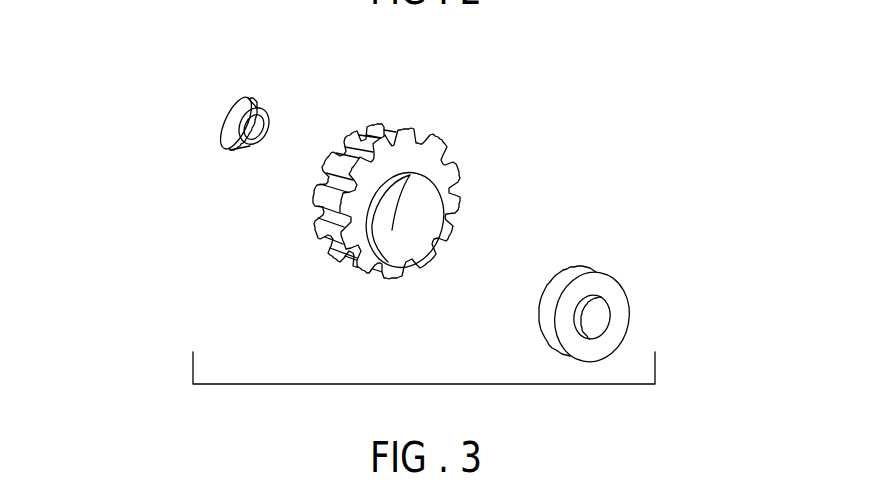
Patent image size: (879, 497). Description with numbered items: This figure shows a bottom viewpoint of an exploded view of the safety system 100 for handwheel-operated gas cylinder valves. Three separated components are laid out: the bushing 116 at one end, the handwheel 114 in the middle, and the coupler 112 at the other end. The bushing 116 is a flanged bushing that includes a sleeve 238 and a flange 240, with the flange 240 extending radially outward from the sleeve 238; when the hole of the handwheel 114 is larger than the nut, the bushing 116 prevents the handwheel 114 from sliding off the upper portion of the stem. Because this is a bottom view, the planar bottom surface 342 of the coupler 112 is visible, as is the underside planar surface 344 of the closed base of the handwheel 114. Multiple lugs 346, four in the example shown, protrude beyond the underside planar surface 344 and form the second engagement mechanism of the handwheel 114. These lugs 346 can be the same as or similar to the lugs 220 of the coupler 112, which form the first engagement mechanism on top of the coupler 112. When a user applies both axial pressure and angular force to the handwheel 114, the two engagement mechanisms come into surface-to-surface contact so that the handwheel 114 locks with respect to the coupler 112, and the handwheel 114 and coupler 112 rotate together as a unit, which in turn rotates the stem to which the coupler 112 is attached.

The safety system 100 is at (138, 77).
The coupler 112 is at (597, 270).
The handwheel 114 is at (447, 150).
The bushing 116 is at (250, 97).
The lugs 220 is at (539, 308).
The sleeve 238 is at (228, 146).
The flange 240 is at (225, 130).
The bottom surface 342 is at (622, 318).
The underside planar surface 344 is at (410, 200).
The lugs 346 is at (322, 243).